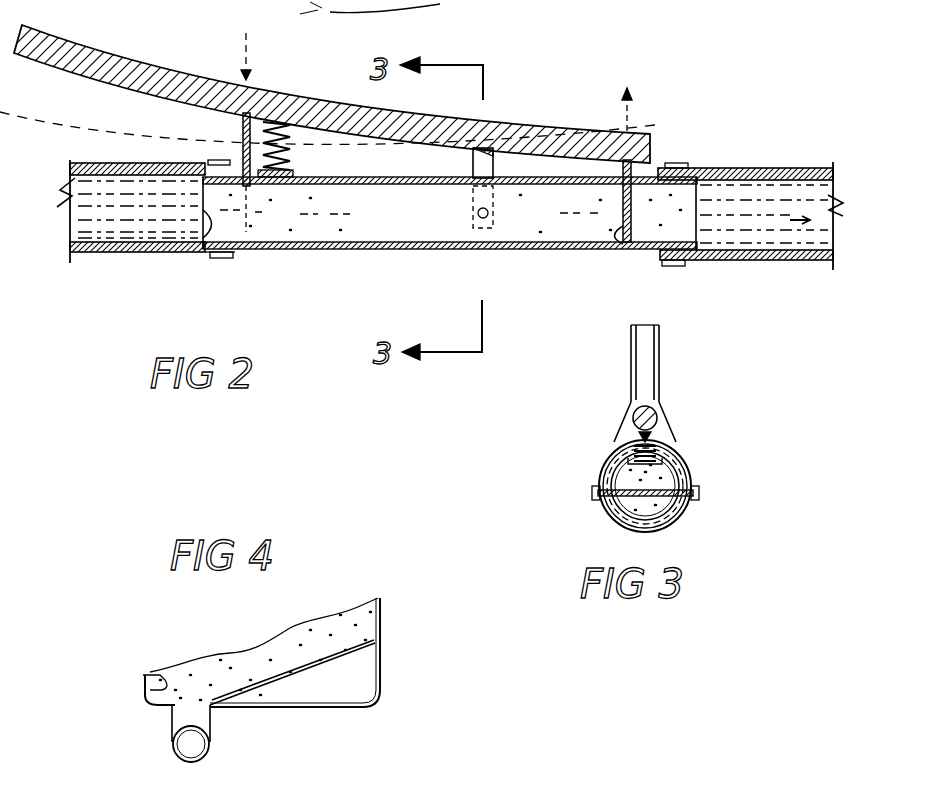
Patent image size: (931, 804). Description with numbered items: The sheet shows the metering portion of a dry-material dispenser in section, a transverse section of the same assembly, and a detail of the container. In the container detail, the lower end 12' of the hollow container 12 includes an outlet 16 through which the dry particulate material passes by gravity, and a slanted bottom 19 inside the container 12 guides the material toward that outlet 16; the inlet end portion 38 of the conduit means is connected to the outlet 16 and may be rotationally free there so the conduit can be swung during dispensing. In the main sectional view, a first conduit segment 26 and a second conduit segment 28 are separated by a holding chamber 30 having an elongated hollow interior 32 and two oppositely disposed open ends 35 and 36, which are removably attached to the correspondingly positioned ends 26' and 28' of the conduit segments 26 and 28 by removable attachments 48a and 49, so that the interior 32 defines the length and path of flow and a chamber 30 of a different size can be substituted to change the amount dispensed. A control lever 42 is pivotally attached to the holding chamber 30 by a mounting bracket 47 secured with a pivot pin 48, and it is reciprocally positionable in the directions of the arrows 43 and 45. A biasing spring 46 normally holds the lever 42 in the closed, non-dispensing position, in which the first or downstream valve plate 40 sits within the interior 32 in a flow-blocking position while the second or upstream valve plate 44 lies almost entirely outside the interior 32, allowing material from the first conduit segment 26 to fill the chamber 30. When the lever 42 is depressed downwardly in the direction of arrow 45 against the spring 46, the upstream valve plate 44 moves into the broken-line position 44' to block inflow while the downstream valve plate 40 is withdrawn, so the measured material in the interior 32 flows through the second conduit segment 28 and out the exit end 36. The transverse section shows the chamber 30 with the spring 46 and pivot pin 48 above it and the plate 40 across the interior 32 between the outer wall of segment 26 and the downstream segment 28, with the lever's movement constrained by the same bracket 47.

In FIG. 4, the container 12 is at (345, 652).
In FIG. 4, the lower end of the container 12' is at (295, 716).
In FIG. 4, the outlet 16 is at (143, 690).
In FIG. 4, the slanted bottom 19 is at (300, 684).
In FIG. 2, the first conduit segment 26 is at (116, 232).
In FIG. 3, the first conduit segment 26 is at (608, 499).
In FIG. 2, the end of the first conduit segment 26' is at (266, 280).
In FIG. 2, the second conduit segment 28 is at (750, 188).
In FIG. 2, the end of the second conduit segment 28' is at (718, 283).
In FIG. 3, the holding chamber 30 is at (665, 525).
In FIG. 4, the holding chamber 30 is at (384, 648).
In FIG. 2, the elongated hollow interior 32 is at (503, 215).
In FIG. 3, the elongated hollow interior 32 is at (605, 508).
In FIG. 2, the open end 35 is at (198, 250).
In FIG. 2, the open end 36 is at (690, 226).
In FIG. 4, the inlet end portion 38 is at (209, 747).
In FIG. 2, the first or downstream valve plate 40 is at (618, 240).
In FIG. 2, the control lever 42 is at (500, 120).
In FIG. 2, the directional arrow 43 is at (633, 102).
In FIG. 2, the second or upstream valve plate 44 is at (201, 171).
In FIG. 2, the upstream valve plate in dispensing position 44' is at (450, 213).
In FIG. 2, the directional arrow 45 is at (242, 48).
In FIG. 2, the biasing spring 46 is at (292, 154).
In FIG. 3, the biasing spring 46 is at (675, 450).
In FIG. 2, the mounting bracket 47 is at (473, 160).
In FIG. 2, the pivot pin 48 is at (477, 213).
In FIG. 3, the pivot pin 48 is at (699, 493).
In FIG. 2, the removable attachment 48a is at (681, 164).
In FIG. 2, the removable attachment 49 is at (222, 259).